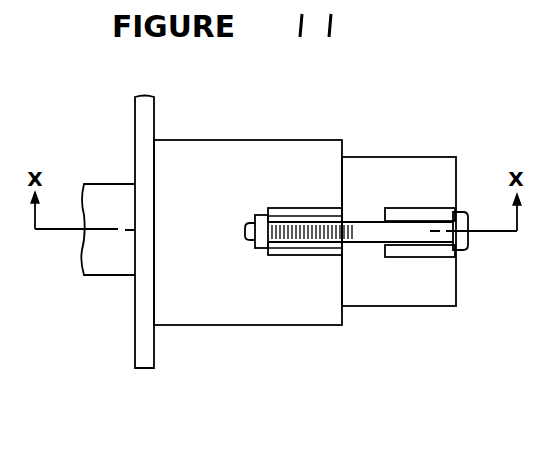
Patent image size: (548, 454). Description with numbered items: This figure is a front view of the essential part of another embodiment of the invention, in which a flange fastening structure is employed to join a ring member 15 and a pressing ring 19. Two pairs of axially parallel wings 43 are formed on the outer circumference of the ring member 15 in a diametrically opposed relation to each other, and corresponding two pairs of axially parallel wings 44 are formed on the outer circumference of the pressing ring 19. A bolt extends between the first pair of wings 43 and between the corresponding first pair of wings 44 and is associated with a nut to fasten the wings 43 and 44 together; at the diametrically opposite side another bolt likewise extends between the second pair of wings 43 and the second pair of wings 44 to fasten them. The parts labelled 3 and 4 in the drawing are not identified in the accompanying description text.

The shaft 3 is at (107, 258).
The mounting plate 4 is at (143, 325).
The ring member 15 is at (183, 298).
The pressing ring 19 is at (373, 275).
The wings 43 is at (294, 210).
The wings 44 is at (412, 213).